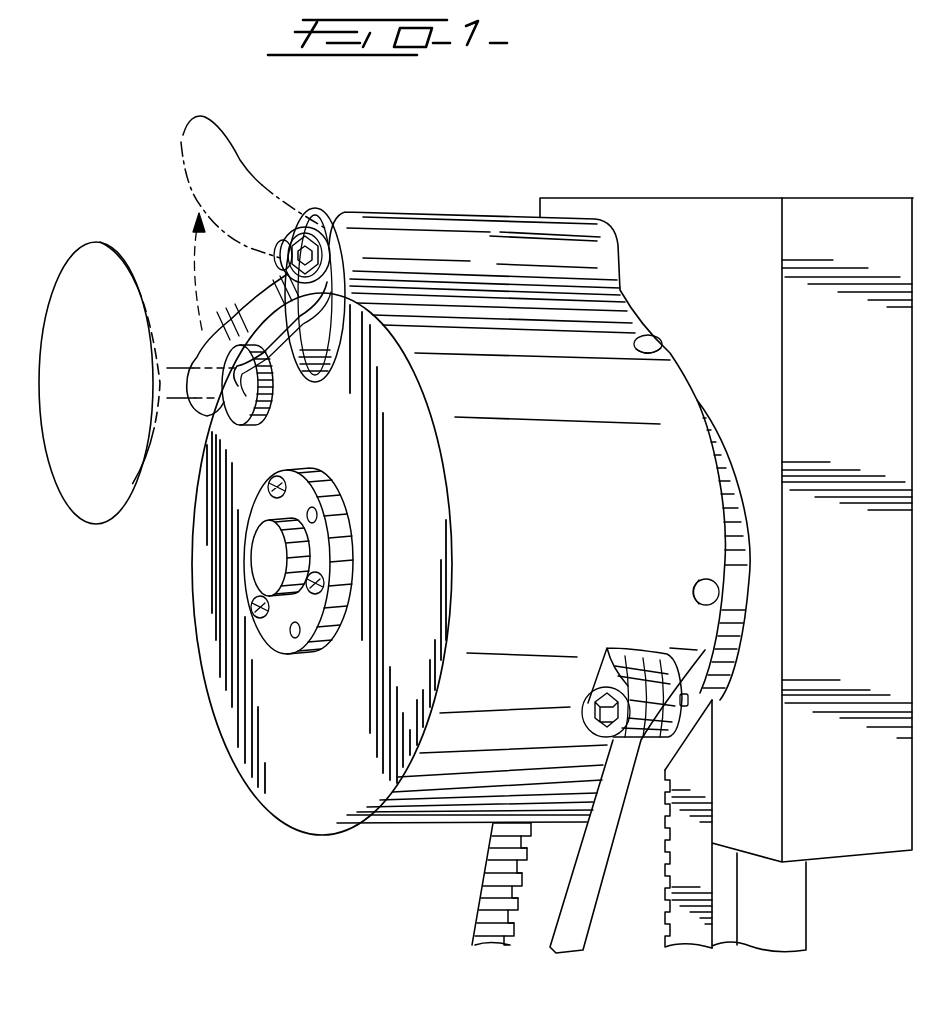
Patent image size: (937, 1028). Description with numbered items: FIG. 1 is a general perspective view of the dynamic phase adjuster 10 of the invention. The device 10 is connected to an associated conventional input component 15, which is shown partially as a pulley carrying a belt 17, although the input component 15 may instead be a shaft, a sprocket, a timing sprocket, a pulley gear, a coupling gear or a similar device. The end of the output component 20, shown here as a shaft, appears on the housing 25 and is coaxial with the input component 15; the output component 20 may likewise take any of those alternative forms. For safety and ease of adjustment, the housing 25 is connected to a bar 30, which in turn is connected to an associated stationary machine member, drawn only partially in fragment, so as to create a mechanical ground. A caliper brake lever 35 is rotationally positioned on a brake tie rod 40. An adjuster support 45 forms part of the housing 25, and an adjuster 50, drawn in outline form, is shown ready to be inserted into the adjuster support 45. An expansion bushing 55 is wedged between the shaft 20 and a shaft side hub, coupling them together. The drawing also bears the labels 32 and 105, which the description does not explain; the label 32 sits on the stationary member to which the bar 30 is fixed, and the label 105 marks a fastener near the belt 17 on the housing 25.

The dynamic phase adjuster 10 is at (478, 140).
The input component 15 is at (725, 500).
The belt 17 is at (702, 875).
The output component 20 is at (284, 572).
The housing 25 is at (578, 533).
The bar 30 is at (607, 872).
The support frame 32 is at (843, 618).
The caliper brake lever 35 is at (274, 325).
The brake tie rod 40 is at (298, 226).
The adjuster support 45 is at (275, 397).
The adjuster 50 is at (108, 394).
The expansion bushing 55 is at (337, 543).
The tensioner bolt 105 is at (592, 708).